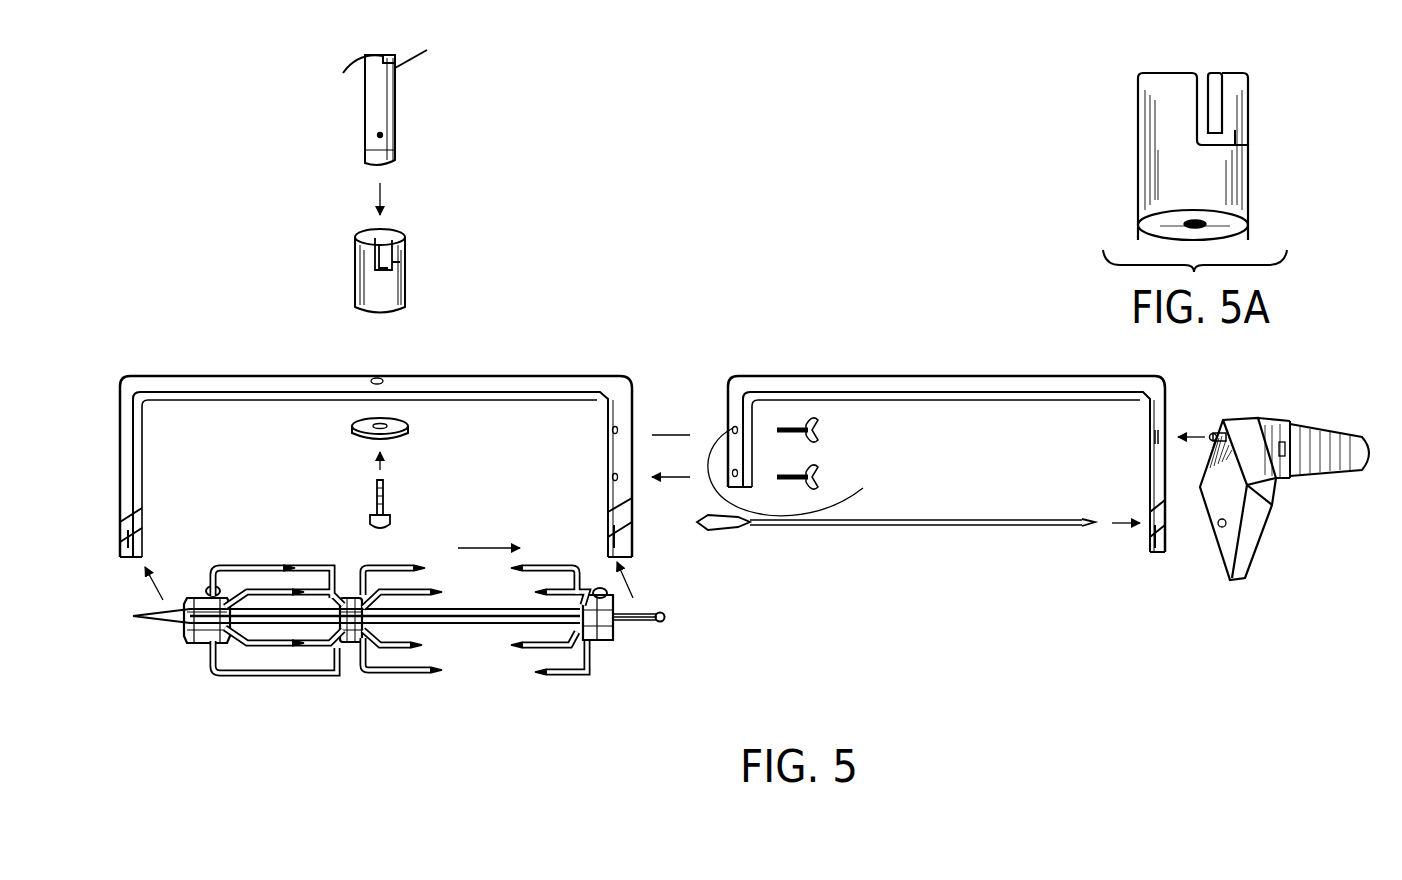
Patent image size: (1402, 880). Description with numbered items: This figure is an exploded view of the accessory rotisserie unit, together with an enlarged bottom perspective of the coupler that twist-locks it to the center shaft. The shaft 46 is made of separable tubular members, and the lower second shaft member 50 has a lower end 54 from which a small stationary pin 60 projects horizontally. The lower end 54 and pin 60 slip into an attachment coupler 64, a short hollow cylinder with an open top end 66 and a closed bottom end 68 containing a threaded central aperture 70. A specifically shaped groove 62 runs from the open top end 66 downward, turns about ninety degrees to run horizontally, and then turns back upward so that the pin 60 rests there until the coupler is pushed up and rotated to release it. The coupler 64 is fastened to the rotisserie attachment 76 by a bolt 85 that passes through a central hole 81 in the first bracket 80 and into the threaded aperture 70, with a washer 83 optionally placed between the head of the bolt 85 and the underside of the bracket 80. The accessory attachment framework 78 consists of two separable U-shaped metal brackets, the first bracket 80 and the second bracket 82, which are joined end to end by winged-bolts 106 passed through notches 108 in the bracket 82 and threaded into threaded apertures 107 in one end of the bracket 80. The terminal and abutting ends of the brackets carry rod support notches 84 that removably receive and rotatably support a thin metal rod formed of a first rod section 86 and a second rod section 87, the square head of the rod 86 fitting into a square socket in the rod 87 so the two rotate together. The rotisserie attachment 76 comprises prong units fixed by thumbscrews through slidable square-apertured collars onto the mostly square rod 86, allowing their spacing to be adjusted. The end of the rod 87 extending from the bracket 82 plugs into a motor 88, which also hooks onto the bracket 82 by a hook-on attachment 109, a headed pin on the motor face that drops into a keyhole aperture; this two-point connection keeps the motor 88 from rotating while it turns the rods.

In FIG. 5, the shaft 46 is at (397, 83).
In FIG. 5, the second shaft member 50 is at (363, 86).
In FIG. 5, the lower end 54 is at (365, 152).
In FIG. 5, the pin 60 is at (380, 135).
In FIG. 5, the groove 62 is at (393, 268).
In FIG. 5A, the groove 62 is at (1218, 140).
In FIG. 5, the attachment coupler 64 is at (355, 262).
In FIG. 5A, the attachment coupler 64 is at (1137, 130).
In FIG. 5, the open top end 66 is at (385, 237).
In FIG. 5A, the open top end 66 is at (1190, 66).
In FIG. 5A, the closed bottom end 68 is at (1222, 225).
In FIG. 5A, the threaded central aperture 70 is at (1190, 226).
In FIG. 5, the rotisserie attachment 76 is at (275, 682).
In FIG. 5, the accessory attachment framework 78 is at (800, 374).
In FIG. 5, the first bracket 80 is at (224, 376).
In FIG. 5, the central hole 81 is at (385, 379).
In FIG. 5, the second bracket 82 is at (945, 376).
In FIG. 5, the washer 83 is at (408, 428).
In FIG. 5, the rod support notches 84 is at (140, 512).
In FIG. 5, the bolt 85 is at (390, 498).
In FIG. 5, the first rod section 86 is at (650, 622).
In FIG. 5, the second rod section 87 is at (940, 530).
In FIG. 5, the motor 88 is at (1322, 428).
In FIG. 5, the winged-bolts 106 is at (817, 427).
In FIG. 5, the threaded apertures 107 is at (617, 477).
In FIG. 5, the notches 108 is at (857, 435).
In FIG. 5, the hook-on attachment 109 is at (1215, 433).